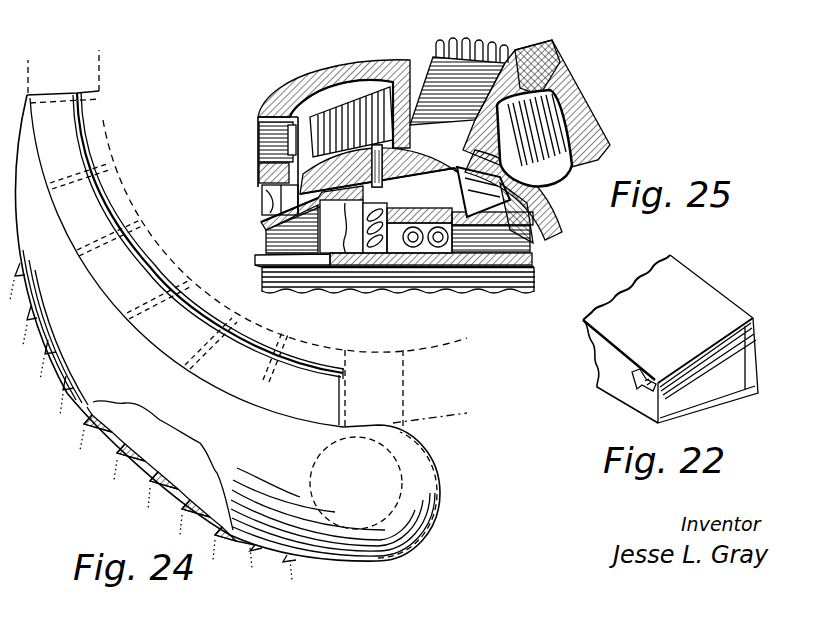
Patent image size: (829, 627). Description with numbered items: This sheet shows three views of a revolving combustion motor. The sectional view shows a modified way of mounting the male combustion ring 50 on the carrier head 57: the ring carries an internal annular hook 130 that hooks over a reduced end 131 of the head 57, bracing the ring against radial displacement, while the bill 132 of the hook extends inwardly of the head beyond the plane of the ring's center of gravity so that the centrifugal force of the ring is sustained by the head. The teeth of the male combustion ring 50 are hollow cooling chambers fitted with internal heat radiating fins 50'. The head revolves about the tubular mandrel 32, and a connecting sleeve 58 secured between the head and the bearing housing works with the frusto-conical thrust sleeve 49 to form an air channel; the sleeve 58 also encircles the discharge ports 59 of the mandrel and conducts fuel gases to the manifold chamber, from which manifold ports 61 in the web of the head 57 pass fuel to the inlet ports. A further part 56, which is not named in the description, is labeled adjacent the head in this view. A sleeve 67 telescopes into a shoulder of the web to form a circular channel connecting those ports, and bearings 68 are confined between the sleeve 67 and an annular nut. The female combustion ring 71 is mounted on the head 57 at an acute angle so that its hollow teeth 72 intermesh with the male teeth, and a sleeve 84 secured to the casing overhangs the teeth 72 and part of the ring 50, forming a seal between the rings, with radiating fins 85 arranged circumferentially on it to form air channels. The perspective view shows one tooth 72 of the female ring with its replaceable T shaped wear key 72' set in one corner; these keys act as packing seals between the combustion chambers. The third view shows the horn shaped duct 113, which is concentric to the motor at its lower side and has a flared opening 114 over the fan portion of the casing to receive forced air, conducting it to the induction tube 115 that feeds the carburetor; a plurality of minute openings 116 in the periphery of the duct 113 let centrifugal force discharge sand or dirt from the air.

In FIG. 25, the tubular mandrel 32 is at (387, 280).
In FIG. 25, the thrust sleeve 49 is at (275, 170).
In FIG. 25, the male combustion ring 50 is at (334, 133).
In FIG. 25, the internal heat radiating fins 50' is at (351, 112).
In FIG. 25, the slotted member 56 is at (360, 187).
In FIG. 25, the head 57 is at (447, 160).
In FIG. 25, the connecting sleeve 58 is at (263, 223).
In FIG. 25, the discharge ports 59 is at (270, 260).
In FIG. 25, the manifold ports 61 is at (338, 305).
In FIG. 25, the sleeve 67 is at (527, 242).
In FIG. 25, the bearings 68 is at (440, 267).
In FIG. 25, the female combustion ring 71 is at (570, 133).
In FIG. 22, the teeth 72 is at (670, 346).
In FIG. 22, the T shaped wear key 72' is at (606, 393).
In FIG. 25, the sleeve 84 is at (438, 54).
In FIG. 25, the radiating fins 85 is at (483, 55).
In FIG. 24, the horn shaped duct 113 is at (80, 358).
In FIG. 24, the flared opening 114 is at (233, 372).
In FIG. 24, the induction tube 115 is at (413, 449).
In FIG. 24, the minute openings 116 is at (115, 457).
In FIG. 25, the internal annular hook 130 is at (268, 152).
In FIG. 25, the reduced end 131 is at (266, 195).
In FIG. 25, the bill 132 is at (341, 226).